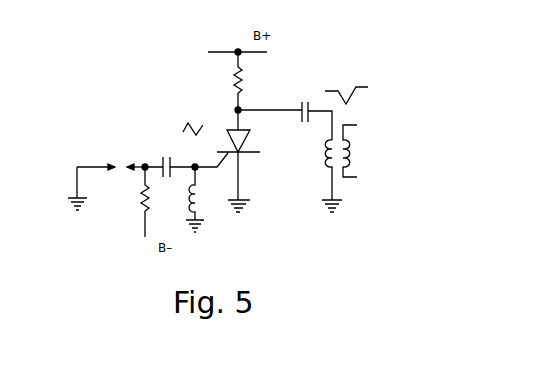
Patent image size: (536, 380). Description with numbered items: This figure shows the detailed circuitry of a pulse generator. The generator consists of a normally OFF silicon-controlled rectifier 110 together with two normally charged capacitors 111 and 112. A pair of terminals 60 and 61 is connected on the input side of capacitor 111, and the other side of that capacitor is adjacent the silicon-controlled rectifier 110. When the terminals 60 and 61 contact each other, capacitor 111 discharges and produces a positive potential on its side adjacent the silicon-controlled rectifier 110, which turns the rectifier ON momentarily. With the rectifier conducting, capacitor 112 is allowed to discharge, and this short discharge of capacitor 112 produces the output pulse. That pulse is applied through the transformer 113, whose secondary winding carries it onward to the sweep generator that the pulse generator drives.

The terminal 60 is at (113, 165).
The terminal 61 is at (130, 165).
The silicon-controlled rectifier 110 is at (237, 127).
The capacitor 111 is at (163, 152).
The capacitor 112 is at (307, 98).
The transformer 113 is at (347, 198).